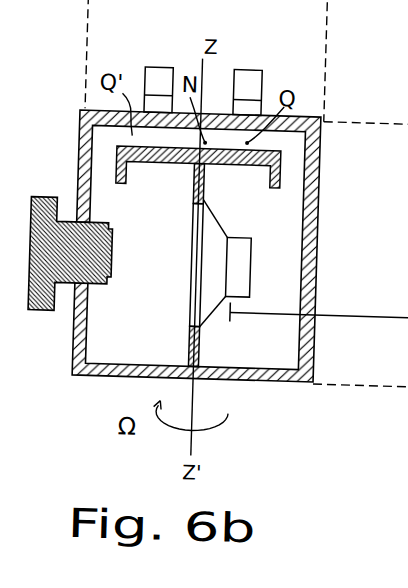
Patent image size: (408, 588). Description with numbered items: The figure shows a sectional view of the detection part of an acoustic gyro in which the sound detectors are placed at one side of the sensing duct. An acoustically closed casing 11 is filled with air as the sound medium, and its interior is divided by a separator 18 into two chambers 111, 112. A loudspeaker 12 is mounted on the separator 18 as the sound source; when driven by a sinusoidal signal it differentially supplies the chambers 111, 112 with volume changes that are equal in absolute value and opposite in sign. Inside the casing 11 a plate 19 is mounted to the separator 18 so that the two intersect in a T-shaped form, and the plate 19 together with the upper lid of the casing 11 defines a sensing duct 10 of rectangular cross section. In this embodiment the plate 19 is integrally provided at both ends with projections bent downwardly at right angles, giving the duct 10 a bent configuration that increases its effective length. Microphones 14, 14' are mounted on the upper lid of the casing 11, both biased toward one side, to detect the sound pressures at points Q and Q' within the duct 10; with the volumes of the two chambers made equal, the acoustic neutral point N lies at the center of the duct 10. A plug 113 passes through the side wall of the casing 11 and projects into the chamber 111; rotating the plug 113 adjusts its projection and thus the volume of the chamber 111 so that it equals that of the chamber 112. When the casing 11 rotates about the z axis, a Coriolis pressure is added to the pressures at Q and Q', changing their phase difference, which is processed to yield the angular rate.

The sensing duct 10 is at (158, 137).
The casing 11 is at (316, 110).
The loudspeaker 12 is at (228, 218).
The microphone 14 is at (274, 81).
The microphone 14' is at (140, 71).
The separator 18 is at (207, 341).
The plate 19 is at (156, 161).
The chamber 111 is at (150, 299).
The chamber 112 is at (319, 285).
The plug 113 is at (46, 197).